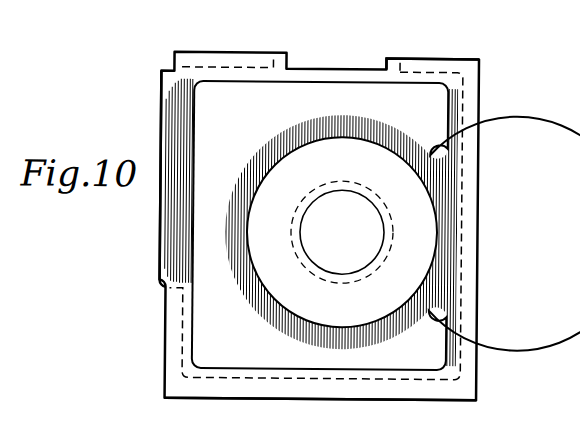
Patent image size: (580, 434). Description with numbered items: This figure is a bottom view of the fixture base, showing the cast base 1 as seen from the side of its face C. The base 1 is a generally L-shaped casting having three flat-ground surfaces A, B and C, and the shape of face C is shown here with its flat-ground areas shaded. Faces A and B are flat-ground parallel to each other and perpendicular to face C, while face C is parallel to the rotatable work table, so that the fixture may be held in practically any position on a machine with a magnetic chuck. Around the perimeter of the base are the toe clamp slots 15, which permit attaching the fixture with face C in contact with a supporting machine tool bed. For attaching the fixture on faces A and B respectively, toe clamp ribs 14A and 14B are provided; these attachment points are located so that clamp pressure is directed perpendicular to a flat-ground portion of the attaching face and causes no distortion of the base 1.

The cast base 1 is at (317, 222).
The toe clamp rib 14A is at (216, 83).
The toe clamp rib 14B is at (232, 368).
The toe clamp slots 15 is at (228, 64).
The flat-ground surface A is at (388, 59).
The flat-ground surface B is at (258, 400).
The flat-ground surface C is at (172, 227).